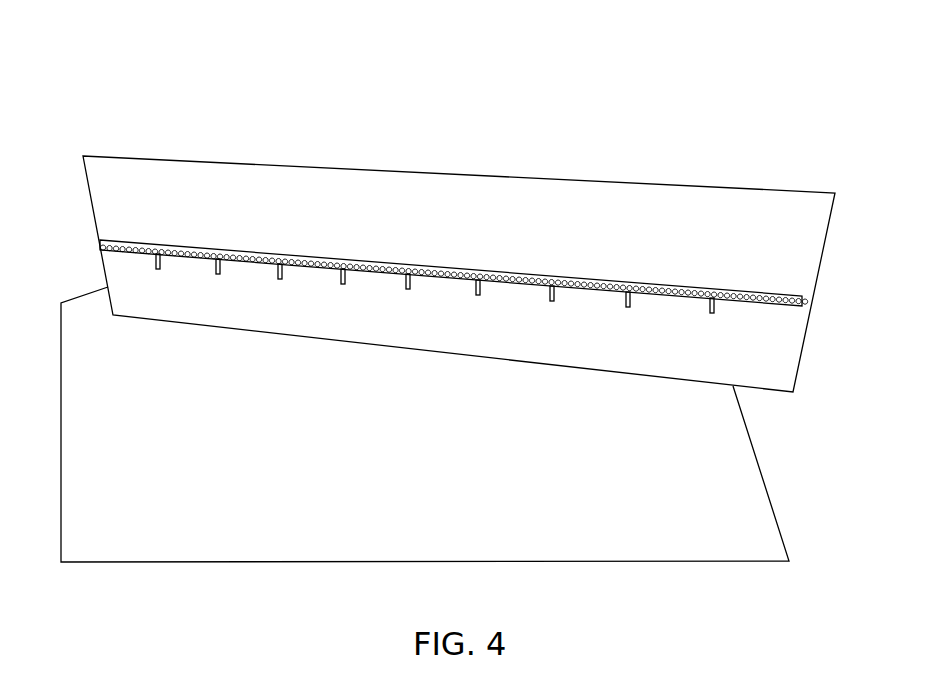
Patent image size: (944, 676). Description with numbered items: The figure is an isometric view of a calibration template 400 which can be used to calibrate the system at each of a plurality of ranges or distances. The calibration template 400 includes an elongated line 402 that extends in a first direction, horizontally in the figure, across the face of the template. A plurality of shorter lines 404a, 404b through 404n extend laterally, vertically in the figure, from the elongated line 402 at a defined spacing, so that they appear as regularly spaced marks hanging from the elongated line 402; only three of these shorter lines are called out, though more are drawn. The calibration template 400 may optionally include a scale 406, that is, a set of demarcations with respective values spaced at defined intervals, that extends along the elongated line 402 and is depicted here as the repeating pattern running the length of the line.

The calibration template 400 is at (194, 62).
The elongated line 402 is at (464, 268).
The scale 406 is at (557, 283).
The shorter line 404a is at (153, 258).
The shorter line 404b is at (226, 264).
The shorter line 404n is at (718, 310).